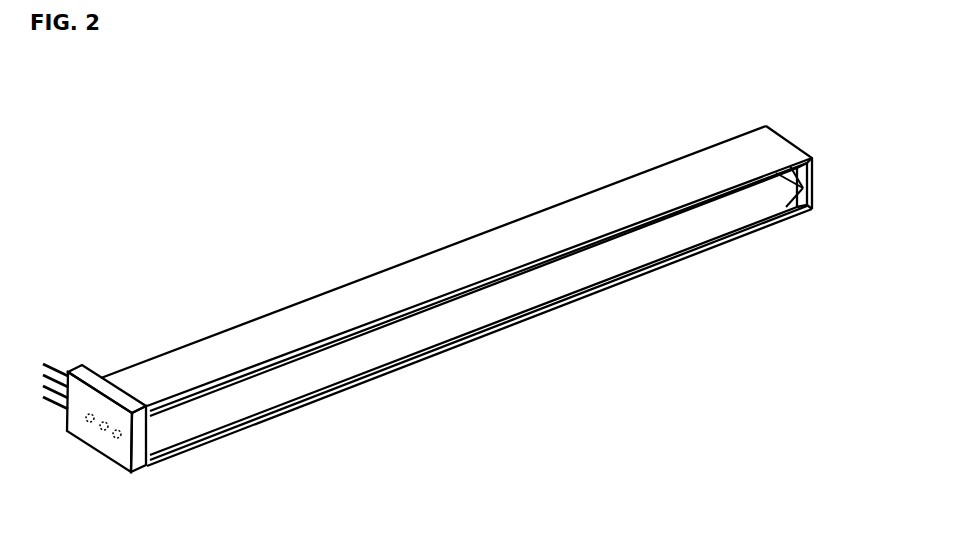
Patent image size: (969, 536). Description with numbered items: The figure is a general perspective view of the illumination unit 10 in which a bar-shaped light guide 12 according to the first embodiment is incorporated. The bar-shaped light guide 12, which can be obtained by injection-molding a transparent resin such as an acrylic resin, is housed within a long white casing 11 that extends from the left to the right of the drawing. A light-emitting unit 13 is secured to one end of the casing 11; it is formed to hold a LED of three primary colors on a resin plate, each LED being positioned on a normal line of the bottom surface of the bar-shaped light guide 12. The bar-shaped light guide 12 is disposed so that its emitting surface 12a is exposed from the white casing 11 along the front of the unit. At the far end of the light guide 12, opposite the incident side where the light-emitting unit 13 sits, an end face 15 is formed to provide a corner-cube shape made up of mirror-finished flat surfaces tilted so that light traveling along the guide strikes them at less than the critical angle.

The illumination unit 10 is at (537, 206).
The white casing 11 is at (385, 292).
The bar-shaped light guide 12 is at (400, 352).
The emitting surface 12a is at (586, 276).
The light-emitting unit 13 is at (124, 403).
The end face 15 is at (790, 170).